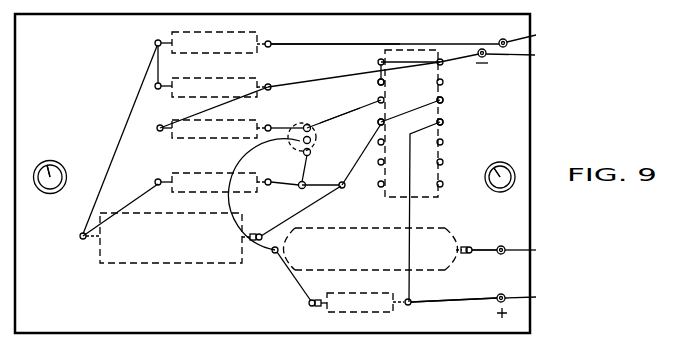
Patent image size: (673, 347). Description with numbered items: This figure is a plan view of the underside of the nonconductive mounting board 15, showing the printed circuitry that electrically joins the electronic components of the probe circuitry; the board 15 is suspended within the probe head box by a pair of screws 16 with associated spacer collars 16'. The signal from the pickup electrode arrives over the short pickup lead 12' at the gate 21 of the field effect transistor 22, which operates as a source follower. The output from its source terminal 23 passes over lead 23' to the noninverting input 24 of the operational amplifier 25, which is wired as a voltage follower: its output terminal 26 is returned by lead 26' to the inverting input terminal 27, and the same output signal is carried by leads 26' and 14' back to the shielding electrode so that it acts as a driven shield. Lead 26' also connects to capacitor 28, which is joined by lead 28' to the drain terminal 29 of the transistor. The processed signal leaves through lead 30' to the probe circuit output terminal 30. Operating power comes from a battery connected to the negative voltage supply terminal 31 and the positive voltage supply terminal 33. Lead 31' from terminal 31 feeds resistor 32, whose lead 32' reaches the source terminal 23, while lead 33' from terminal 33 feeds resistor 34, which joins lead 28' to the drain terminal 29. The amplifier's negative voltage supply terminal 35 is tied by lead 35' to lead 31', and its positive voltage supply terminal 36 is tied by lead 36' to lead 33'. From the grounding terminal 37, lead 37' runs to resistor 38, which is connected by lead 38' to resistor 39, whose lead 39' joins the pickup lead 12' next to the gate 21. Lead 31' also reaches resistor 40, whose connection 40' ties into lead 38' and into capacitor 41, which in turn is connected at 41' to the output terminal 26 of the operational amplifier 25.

The pickup lead 12' is at (311, 193).
The lead 14' is at (327, 169).
The nonconductive mounting board 15 is at (522, 86).
The screws 16 is at (271, 167).
The spacer collars 16' is at (283, 156).
The gate 21 is at (318, 168).
The field effect transistor 22 is at (311, 152).
The source terminal 23 is at (303, 210).
The lead 23' is at (338, 107).
The noninverting input 24 is at (378, 100).
The operational amplifier 25 is at (418, 52).
The output terminal 26 is at (456, 92).
The lead 26' is at (410, 103).
The inverting input terminal 27 is at (378, 122).
The capacitor 28 is at (378, 238).
The lead 28' is at (257, 220).
The drain terminal 29 is at (311, 139).
The output terminal 30 is at (515, 252).
The lead 30' is at (482, 266).
The negative voltage supply terminal 31 is at (499, 57).
The lead 31' is at (314, 76).
The resistor 32 is at (214, 118).
The lead 32' is at (282, 115).
The positive voltage supply terminal 33 is at (485, 304).
The lead 33' is at (454, 315).
The resistor 34 is at (353, 293).
The negative voltage supply terminal 35 is at (369, 82).
The lead 35' is at (401, 76).
The positive voltage supply terminal 36 is at (466, 119).
The lead 36' is at (426, 212).
The grounding terminal 37 is at (415, 36).
The lead 37' is at (335, 34).
The resistor 38 is at (204, 39).
The lead 38' is at (120, 205).
The resistor 39 is at (213, 171).
The lead 39' is at (282, 193).
The resistor 40 is at (213, 76).
The connection 40' is at (120, 140).
The capacitor 41 is at (171, 254).
The connection 41' is at (305, 211).